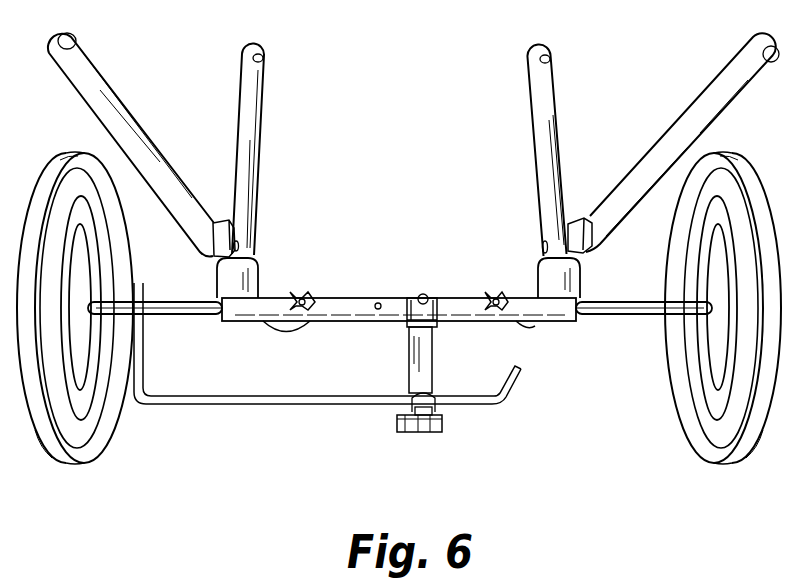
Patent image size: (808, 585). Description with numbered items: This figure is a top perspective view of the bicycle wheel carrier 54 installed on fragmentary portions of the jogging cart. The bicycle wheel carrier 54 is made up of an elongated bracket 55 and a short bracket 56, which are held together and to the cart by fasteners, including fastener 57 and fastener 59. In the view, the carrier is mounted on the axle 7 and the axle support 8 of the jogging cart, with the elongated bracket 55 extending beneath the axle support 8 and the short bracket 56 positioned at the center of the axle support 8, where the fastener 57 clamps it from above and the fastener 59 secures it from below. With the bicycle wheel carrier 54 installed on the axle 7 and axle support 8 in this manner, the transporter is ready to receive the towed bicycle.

The axle 7 is at (192, 305).
The axle support 8 is at (343, 305).
The bicycle wheel carrier 54 is at (793, 580).
The elongated bracket 55 is at (275, 405).
The short bracket 56 is at (407, 357).
The fastener 57 is at (427, 297).
The fastener 59 is at (430, 432).